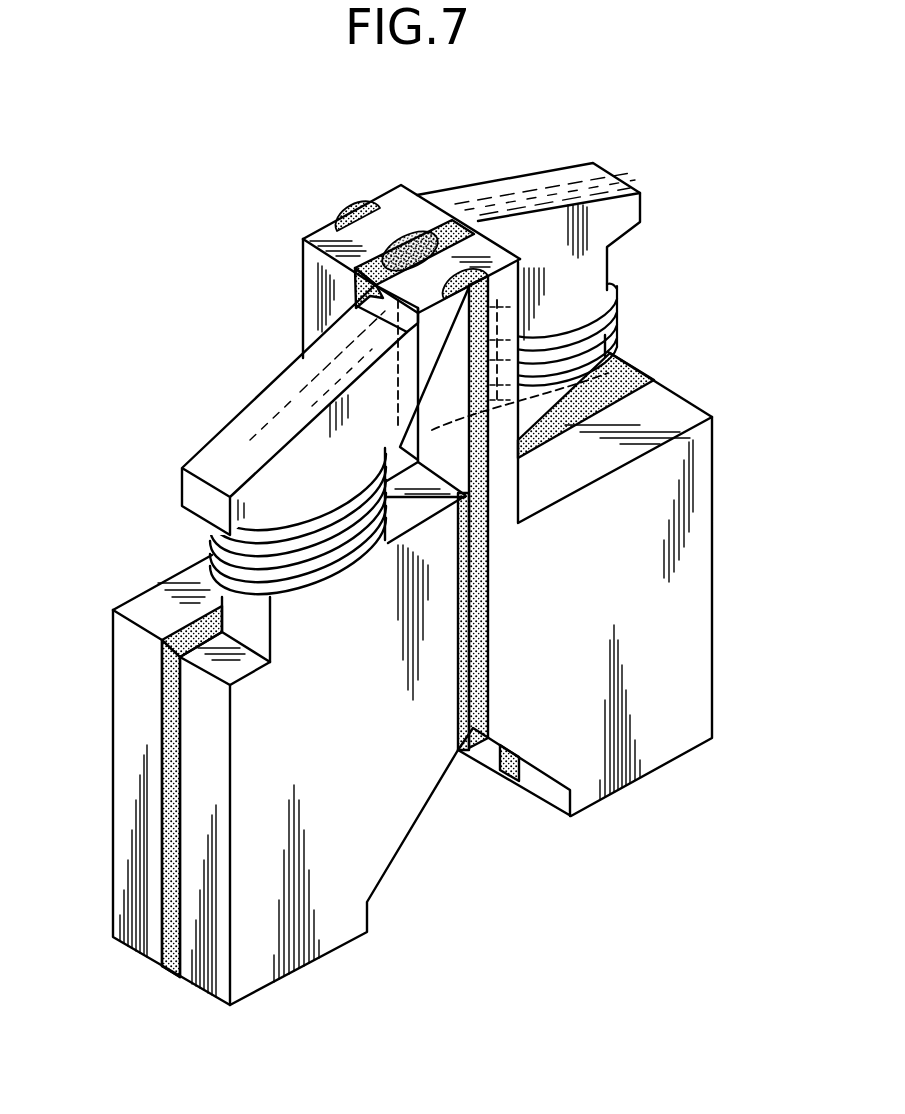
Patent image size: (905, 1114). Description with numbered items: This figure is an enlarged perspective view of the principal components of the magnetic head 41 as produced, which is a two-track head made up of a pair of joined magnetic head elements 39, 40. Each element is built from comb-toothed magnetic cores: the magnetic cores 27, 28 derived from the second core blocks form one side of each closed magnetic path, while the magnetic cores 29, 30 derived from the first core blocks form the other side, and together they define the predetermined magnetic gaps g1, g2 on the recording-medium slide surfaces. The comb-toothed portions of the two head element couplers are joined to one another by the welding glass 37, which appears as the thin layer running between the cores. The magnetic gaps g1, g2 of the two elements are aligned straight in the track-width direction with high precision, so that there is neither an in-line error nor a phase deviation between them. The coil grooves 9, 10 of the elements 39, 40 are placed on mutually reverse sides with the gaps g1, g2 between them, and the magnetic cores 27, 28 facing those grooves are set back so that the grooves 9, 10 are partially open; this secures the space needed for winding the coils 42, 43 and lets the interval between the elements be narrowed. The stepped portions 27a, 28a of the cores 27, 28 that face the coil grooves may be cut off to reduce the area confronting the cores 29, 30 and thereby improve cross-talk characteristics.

The coil groove 9 is at (397, 480).
The coil groove 10 is at (610, 364).
The magnetic core 27 is at (697, 662).
The stepped portion 27a is at (668, 410).
The magnetic core 28 is at (123, 893).
The stepped portion 28a is at (148, 614).
The magnetic core 29 is at (210, 976).
The magnetic core 30 is at (590, 177).
The welding glass 37 is at (333, 232).
The magnetic head element 39 is at (377, 284).
The magnetic head element 40 is at (330, 237).
The magnetic head 41 is at (350, 341).
The coil 42 is at (218, 538).
The coil 43 is at (610, 288).
The magnetic gap g1 is at (465, 252).
The magnetic gap g2 is at (387, 232).